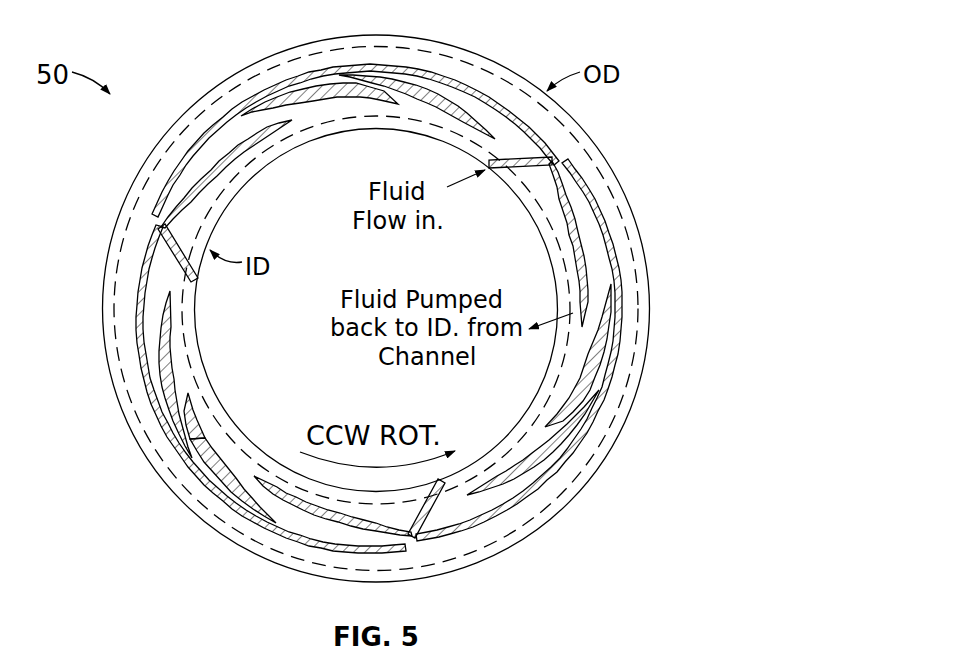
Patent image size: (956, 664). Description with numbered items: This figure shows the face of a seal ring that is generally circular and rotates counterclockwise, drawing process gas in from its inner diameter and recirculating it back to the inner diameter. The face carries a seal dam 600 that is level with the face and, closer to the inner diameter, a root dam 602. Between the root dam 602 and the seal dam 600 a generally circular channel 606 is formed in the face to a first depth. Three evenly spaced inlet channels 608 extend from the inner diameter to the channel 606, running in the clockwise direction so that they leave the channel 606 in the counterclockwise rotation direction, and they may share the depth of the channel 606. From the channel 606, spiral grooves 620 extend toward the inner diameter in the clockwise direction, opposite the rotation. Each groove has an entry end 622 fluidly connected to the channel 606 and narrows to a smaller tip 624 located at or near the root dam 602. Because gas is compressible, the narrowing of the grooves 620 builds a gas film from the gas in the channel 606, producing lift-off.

The seal dam 600 is at (161, 435).
The root dam 602 is at (167, 306).
The channel 606 is at (527, 503).
The inlet channel 608 is at (526, 150).
The spiral groove 620 is at (300, 515).
The entry end 622 is at (227, 490).
The tip 624 is at (197, 408).